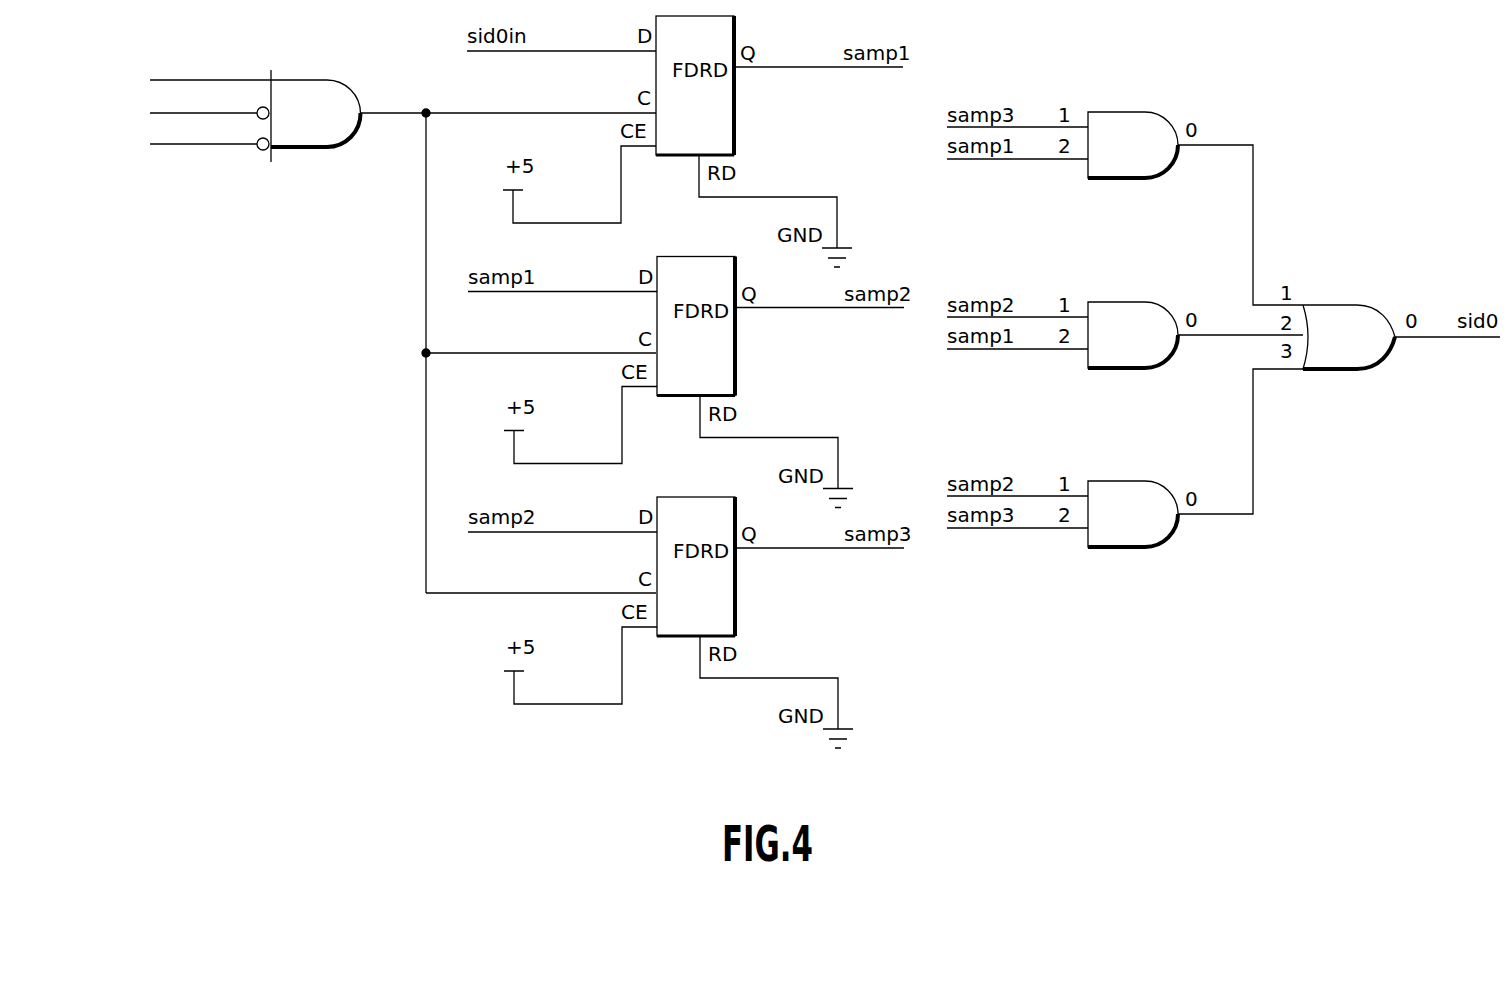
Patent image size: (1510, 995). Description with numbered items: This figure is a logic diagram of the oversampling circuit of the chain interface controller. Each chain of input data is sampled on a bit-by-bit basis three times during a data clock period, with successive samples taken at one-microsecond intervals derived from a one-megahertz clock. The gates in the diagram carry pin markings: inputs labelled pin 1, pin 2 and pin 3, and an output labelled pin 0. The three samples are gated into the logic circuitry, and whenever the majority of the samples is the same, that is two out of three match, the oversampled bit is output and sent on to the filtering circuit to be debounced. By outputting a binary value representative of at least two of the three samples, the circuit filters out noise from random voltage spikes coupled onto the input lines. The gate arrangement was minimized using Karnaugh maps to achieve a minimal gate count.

The gate output pin 0 is at (463, 116).
The gate input pin 1 is at (210, 67).
The gate input pin 2 is at (209, 103).
The gate input pin 3 is at (209, 134).